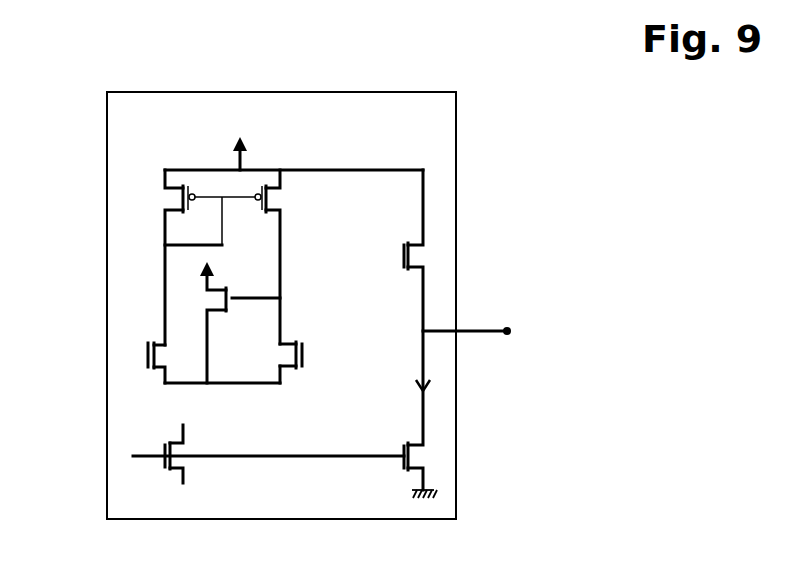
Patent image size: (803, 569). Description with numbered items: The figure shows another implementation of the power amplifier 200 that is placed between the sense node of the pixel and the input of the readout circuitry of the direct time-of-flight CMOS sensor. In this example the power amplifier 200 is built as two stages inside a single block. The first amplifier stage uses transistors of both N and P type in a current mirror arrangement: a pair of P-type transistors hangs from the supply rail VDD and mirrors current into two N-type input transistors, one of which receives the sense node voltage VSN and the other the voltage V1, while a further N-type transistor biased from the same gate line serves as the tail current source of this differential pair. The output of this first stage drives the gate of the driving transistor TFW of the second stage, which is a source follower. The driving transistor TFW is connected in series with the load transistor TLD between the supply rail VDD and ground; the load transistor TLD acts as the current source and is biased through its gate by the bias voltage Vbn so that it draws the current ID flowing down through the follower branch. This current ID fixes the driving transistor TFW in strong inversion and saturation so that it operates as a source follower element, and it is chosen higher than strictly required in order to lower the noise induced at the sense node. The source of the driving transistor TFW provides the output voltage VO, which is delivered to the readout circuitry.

The power amplifier 200 is at (456, 168).
The driving transistor TFW is at (397, 307).
The load transistor TLD is at (402, 451).
The output voltage node VO is at (467, 317).
The supply voltage VDD is at (294, 141).
The sense node input VSN is at (99, 352).
The input voltage V1 is at (314, 361).
The gate voltage Vbn is at (149, 451).
The current ID is at (413, 372).